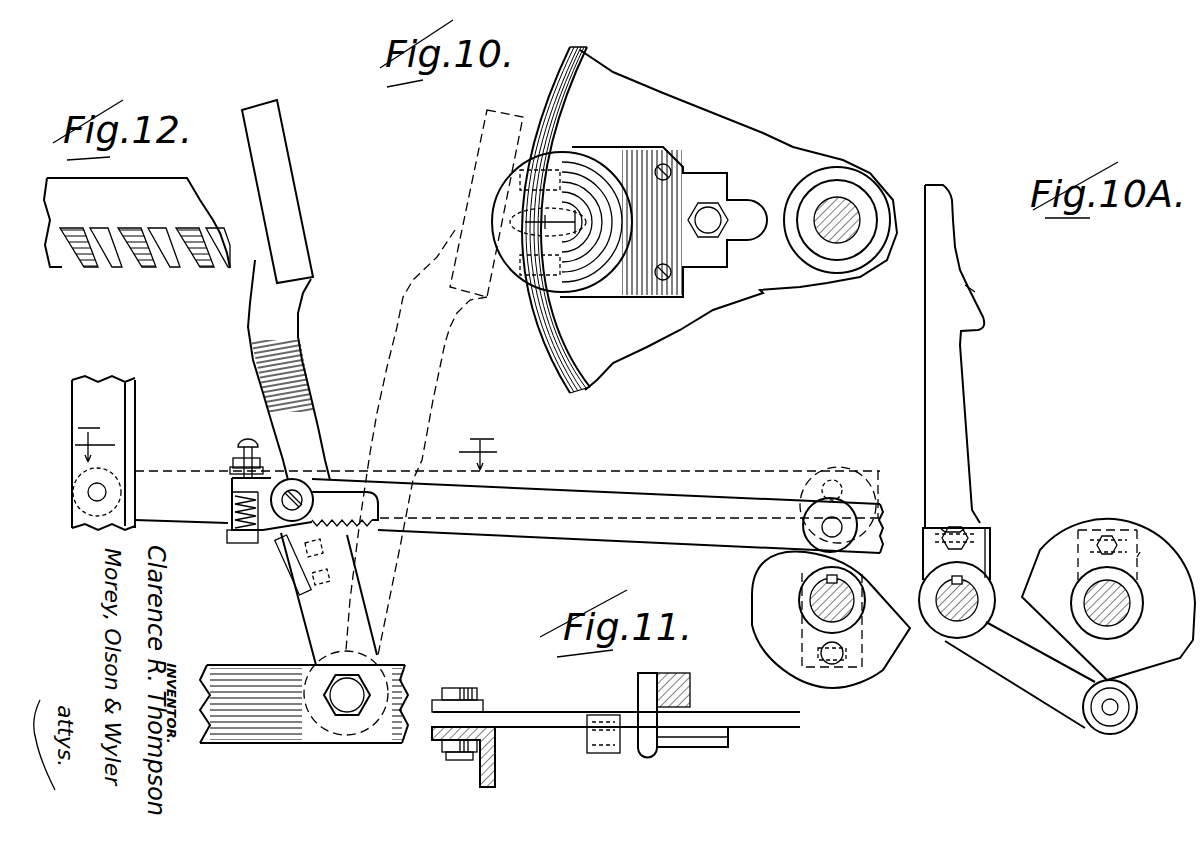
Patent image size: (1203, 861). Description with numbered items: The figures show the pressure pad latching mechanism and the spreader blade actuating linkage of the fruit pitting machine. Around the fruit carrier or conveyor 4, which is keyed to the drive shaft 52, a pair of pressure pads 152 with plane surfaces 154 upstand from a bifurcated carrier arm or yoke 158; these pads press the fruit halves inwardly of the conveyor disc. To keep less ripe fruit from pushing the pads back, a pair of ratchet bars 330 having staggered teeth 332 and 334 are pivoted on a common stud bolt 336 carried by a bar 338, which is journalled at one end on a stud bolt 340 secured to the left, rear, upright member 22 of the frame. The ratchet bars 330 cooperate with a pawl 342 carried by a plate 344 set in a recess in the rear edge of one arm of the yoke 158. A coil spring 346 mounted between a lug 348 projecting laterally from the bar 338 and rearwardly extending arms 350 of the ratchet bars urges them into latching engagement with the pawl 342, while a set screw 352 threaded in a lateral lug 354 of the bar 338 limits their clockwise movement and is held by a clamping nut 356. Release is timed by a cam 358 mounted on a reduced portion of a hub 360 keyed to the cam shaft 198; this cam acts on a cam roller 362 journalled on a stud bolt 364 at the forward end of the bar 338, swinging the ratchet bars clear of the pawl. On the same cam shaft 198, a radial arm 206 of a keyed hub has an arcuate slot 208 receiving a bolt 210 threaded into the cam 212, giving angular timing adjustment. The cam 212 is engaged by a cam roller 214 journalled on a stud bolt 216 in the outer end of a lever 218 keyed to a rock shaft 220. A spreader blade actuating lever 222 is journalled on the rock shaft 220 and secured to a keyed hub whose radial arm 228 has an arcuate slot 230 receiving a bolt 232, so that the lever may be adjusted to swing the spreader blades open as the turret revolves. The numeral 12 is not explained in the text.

In FIG. 10, the fruit carrier or conveyor 4 is at (774, 135).
In FIG. 10, the bar 12 is at (286, 161).
In FIG. 10, the left, rear, upright member 22 is at (126, 440).
In FIG. 11, the left, rear, upright member 22 is at (480, 777).
In FIG. 10, the shaft 52 is at (833, 242).
In FIG. 10, the pressure pads 152 is at (286, 176).
In FIG. 10, the plane surfaces 154 is at (244, 110).
In FIG. 10, the carrier arm or yoke 158 is at (307, 377).
In FIG. 10, the cam shaft 198 is at (812, 600).
In FIG. 10A, the cam shaft 198 is at (1133, 603).
In FIG. 10A, the radial arm 206 is at (1137, 557).
In FIG. 10A, the arcuate slot 208 is at (1132, 530).
In FIG. 10A, the bolt 210 is at (1105, 538).
In FIG. 10A, the cam 212 is at (1155, 657).
In FIG. 10A, the cam roller 214 is at (1130, 720).
In FIG. 10A, the stud bolt 216 is at (1103, 712).
In FIG. 10A, the lever 218 is at (1007, 673).
In FIG. 10A, the rock shaft 220 is at (990, 567).
In FIG. 10A, the spreader blade actuating lever 222 is at (950, 407).
In FIG. 10A, the radial arm 228 is at (973, 553).
In FIG. 10A, the arcuate slot 230 is at (973, 533).
In FIG. 10A, the bolt 232 is at (968, 287).
In FIG. 10, the ratchet bars 330 is at (259, 478).
In FIG. 11, the ratchet bars 330 is at (680, 730).
In FIG. 12, the ratchet bars 330 is at (137, 230).
In FIG. 12, the teeth 332 is at (79, 270).
In FIG. 12, the teeth 334 is at (116, 270).
In FIG. 10, the stud bolt 336 is at (293, 489).
In FIG. 11, the stud bolt 336 is at (647, 755).
In FIG. 10, the bar 338 is at (573, 497).
In FIG. 11, the bar 338 is at (540, 720).
In FIG. 10, the stud bolt 340 is at (100, 488).
In FIG. 11, the stud bolt 340 is at (467, 693).
In FIG. 10, the pawl 342 is at (281, 540).
In FIG. 10, the plate 344 is at (297, 593).
In FIG. 10, the coil spring 346 is at (230, 508).
In FIG. 10, the lug 348 is at (227, 537).
In FIG. 10, the rearwardly extending arms 350 is at (232, 482).
In FIG. 10, the set screw 352 is at (237, 443).
In FIG. 10, the lateral lug 354 is at (230, 468).
In FIG. 10, the clamping nut 356 is at (253, 440).
In FIG. 10, the cam 358 is at (877, 665).
In FIG. 10, the hub 360 is at (805, 615).
In FIG. 10, the cam roller 362 is at (838, 497).
In FIG. 10, the stud bolt 364 is at (823, 530).